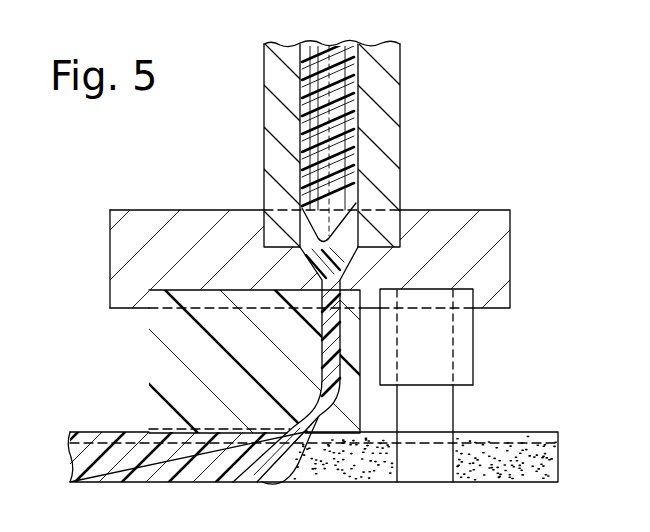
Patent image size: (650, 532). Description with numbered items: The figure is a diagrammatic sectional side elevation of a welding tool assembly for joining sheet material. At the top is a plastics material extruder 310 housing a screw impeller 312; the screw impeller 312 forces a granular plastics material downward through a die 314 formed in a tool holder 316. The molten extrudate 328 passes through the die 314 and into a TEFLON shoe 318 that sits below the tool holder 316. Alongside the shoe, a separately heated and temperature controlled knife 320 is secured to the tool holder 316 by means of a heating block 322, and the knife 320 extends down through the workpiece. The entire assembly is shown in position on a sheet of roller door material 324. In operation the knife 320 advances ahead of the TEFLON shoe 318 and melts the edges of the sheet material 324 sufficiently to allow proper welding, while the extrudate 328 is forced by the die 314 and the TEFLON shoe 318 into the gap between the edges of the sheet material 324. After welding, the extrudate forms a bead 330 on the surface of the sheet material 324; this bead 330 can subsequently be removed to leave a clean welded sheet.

The plastics material extruder 310 is at (398, 103).
The screw impeller 312 is at (360, 186).
The die 314 is at (300, 232).
The tool holder 316 is at (190, 214).
The TEFLON shoe 318 is at (157, 367).
The knife 320 is at (453, 417).
The heating block 322 is at (468, 357).
The sheet of roller door material 324 is at (468, 470).
The extrudate 328 is at (282, 465).
The bead 330 is at (92, 430).